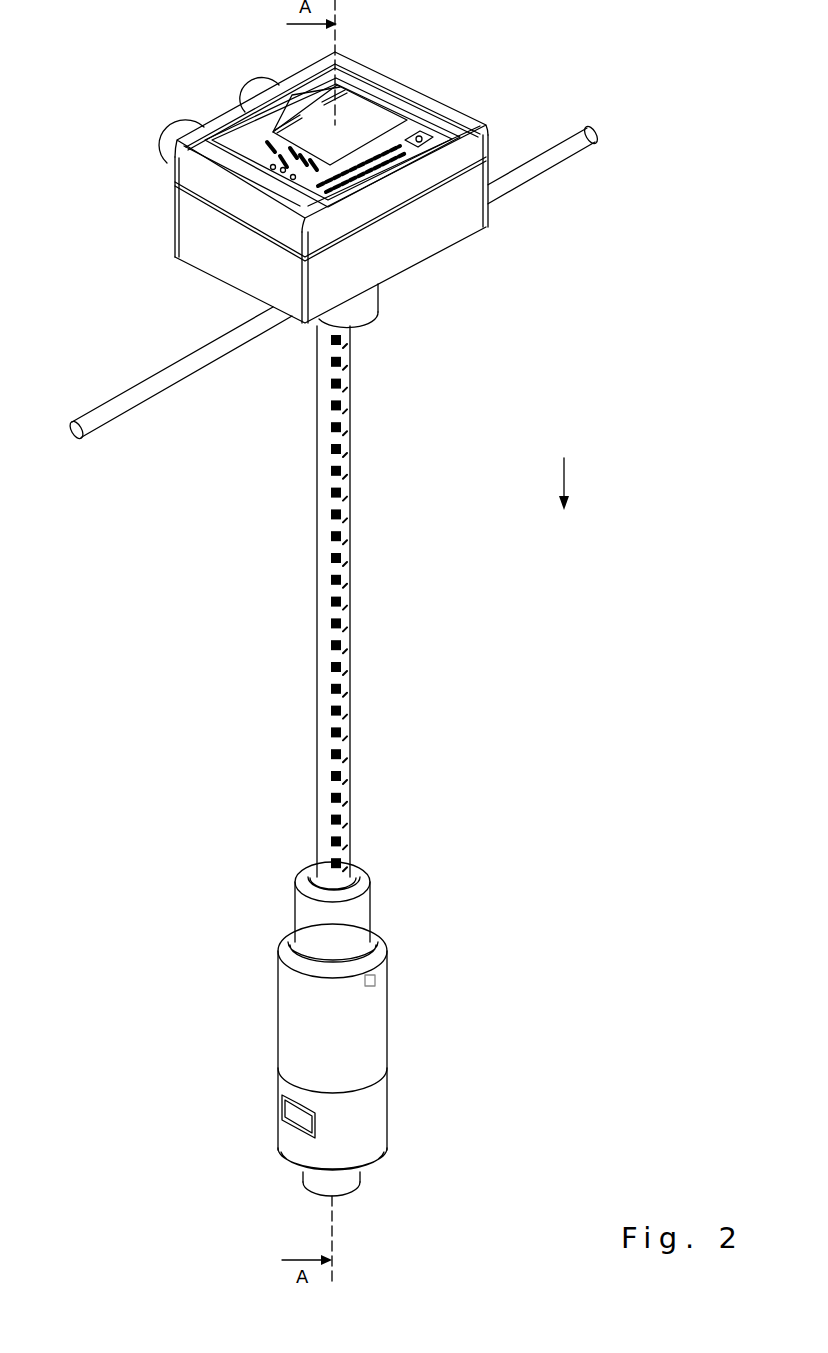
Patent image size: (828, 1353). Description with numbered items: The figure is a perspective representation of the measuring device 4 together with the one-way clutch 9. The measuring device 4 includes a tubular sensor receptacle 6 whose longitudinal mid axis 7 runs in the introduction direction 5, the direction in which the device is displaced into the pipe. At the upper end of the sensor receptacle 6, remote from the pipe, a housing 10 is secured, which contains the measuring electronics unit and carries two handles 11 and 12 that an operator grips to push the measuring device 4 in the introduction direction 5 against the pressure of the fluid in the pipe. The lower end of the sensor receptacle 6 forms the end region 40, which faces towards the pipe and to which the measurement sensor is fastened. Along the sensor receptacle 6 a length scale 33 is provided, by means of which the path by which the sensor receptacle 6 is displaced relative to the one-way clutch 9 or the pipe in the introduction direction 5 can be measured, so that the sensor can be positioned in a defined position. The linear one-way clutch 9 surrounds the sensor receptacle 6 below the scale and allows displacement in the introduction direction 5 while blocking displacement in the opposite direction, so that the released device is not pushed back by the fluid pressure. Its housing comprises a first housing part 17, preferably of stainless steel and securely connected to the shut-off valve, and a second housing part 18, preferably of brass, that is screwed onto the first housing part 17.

The measuring device 4 is at (148, 127).
The introduction direction 5 is at (564, 480).
The sensor receptacle 6 is at (318, 657).
The longitudinal mid axis 7 is at (337, 42).
The one-way clutch 9 is at (398, 1013).
The housing 10 is at (230, 114).
The handle 11 is at (138, 400).
The handle 12 is at (525, 180).
The first housing part 17 is at (287, 1138).
The second housing part 18 is at (293, 1020).
The length scale 33 is at (345, 572).
The end region 40 is at (347, 1193).